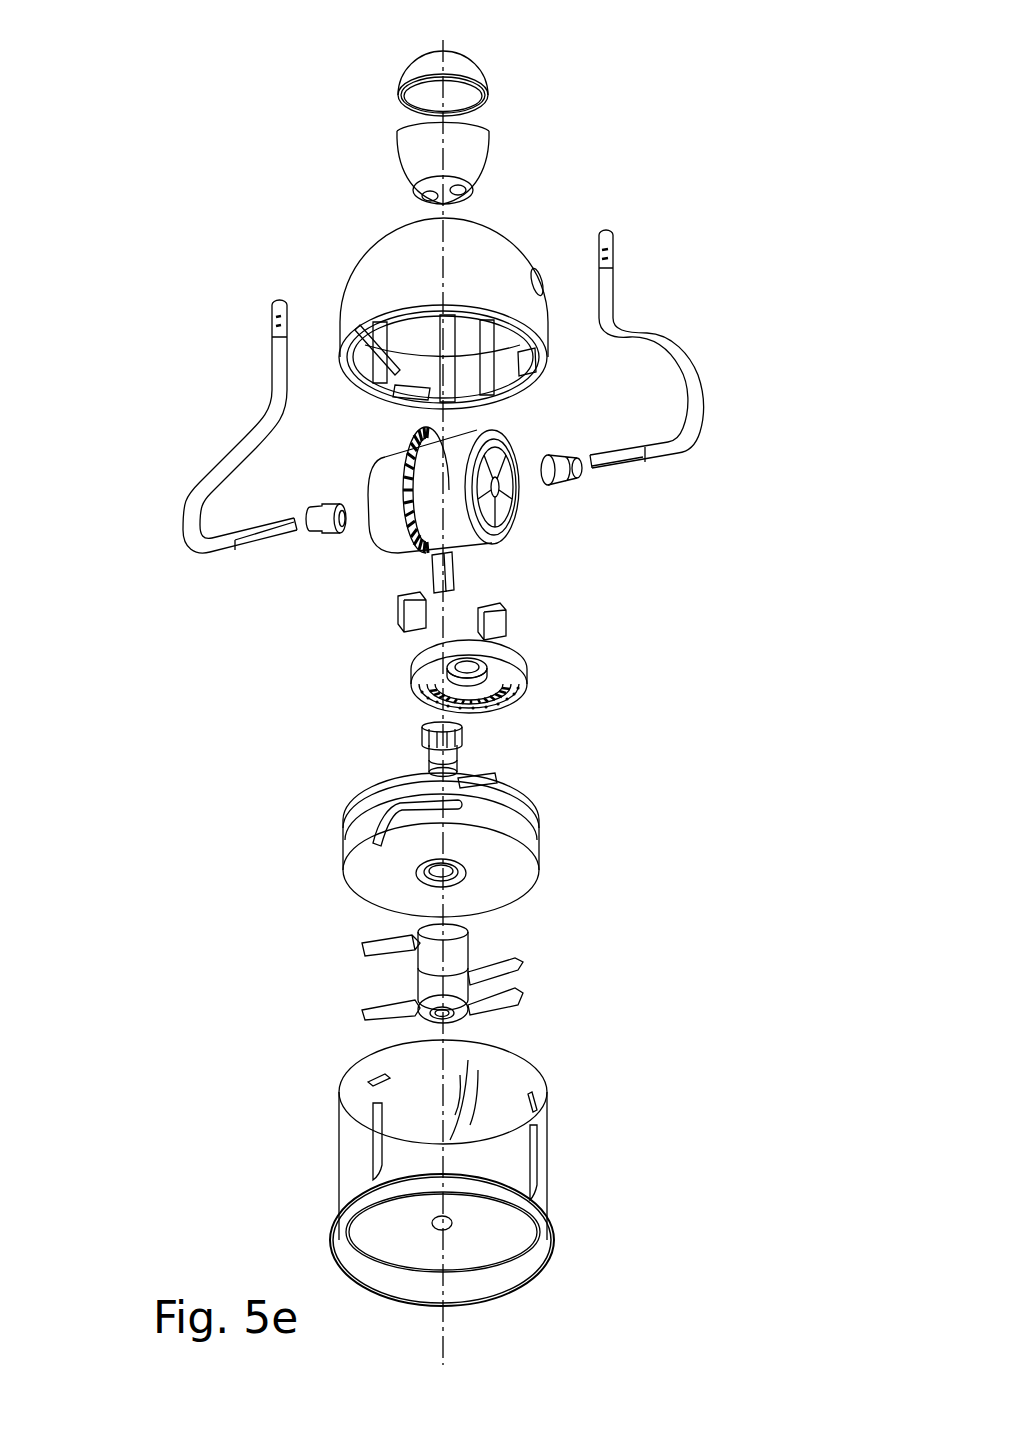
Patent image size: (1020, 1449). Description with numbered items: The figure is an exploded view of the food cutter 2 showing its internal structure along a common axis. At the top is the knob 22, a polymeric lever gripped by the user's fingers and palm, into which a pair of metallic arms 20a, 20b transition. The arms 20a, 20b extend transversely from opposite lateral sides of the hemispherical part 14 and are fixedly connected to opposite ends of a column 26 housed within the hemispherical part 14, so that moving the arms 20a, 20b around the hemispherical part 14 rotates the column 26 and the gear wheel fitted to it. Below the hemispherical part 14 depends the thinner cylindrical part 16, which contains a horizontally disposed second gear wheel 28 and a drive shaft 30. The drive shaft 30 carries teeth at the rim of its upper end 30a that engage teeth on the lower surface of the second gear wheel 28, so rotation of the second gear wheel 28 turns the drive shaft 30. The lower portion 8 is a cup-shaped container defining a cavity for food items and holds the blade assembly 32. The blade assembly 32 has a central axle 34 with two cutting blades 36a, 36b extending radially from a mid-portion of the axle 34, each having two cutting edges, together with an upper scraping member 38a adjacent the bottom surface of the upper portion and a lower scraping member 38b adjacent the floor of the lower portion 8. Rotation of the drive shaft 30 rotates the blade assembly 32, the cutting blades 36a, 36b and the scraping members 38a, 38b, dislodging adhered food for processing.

The food cutter 2 is at (695, 95).
The knob 22 is at (520, 56).
The hemispherical part 14 is at (502, 248).
The arm 20a is at (240, 433).
The arm 20b is at (680, 373).
The column 26 is at (455, 452).
The second gear wheel 28 is at (512, 657).
The drive shaft 30 is at (505, 749).
The upper end 30a is at (388, 744).
The cylindrical part 16 is at (597, 750).
The axle 34 is at (455, 945).
The upper scraping member 38a is at (368, 948).
The cutting blade 36a is at (523, 968).
The cutting blade 36b is at (370, 1013).
The lower scraping member 38b is at (523, 1000).
The blade assembly 32 is at (186, 920).
The lower portion 8 is at (678, 935).